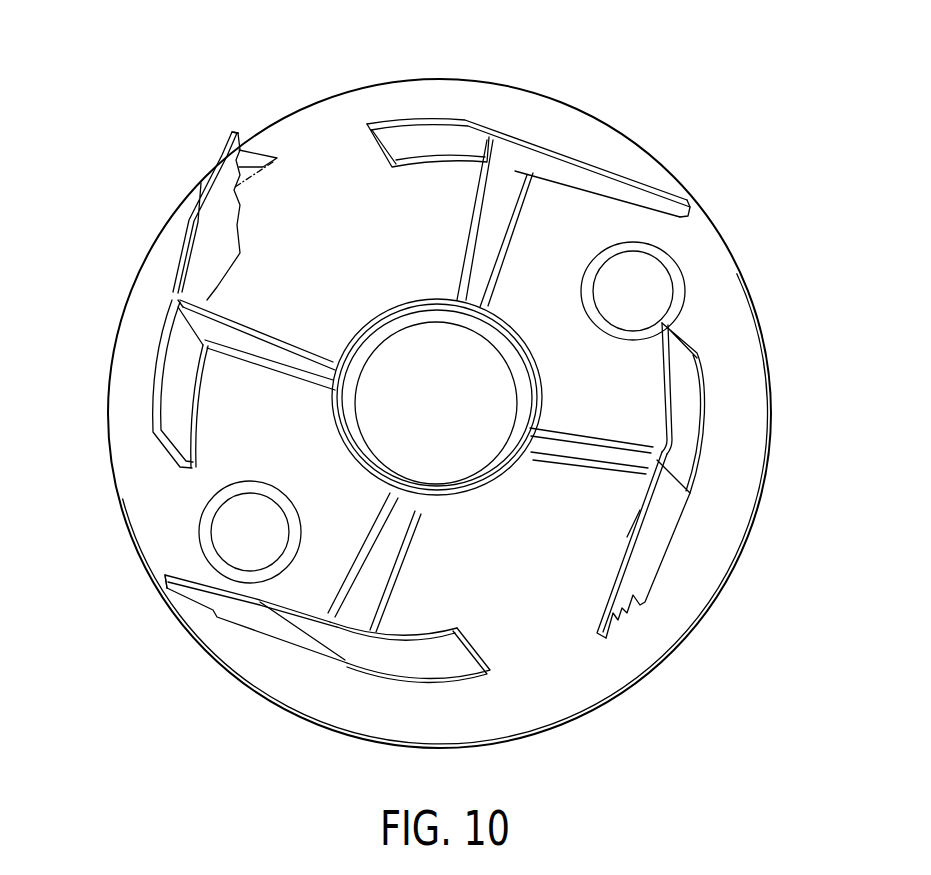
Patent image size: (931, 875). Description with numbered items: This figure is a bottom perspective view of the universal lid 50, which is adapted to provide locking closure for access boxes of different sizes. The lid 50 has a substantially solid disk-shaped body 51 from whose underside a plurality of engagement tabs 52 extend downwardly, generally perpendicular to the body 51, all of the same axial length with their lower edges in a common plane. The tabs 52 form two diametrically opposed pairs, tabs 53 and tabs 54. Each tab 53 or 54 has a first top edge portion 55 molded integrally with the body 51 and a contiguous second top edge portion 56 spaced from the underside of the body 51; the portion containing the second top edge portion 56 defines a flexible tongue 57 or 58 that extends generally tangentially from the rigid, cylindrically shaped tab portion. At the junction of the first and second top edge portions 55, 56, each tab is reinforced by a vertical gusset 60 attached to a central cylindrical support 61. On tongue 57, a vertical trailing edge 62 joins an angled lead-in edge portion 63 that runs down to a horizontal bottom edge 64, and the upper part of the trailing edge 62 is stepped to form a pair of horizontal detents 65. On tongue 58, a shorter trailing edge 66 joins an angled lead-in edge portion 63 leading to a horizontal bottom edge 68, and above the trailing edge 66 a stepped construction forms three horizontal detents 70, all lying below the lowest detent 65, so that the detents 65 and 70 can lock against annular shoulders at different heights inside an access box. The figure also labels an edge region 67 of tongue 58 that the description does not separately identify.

The universal lid 50 is at (744, 257).
The disk-shaped body 51 is at (748, 412).
The engagement tabs 52 is at (612, 325).
The tab 53 is at (227, 238).
The tab 54 is at (417, 634).
The first top edge portion 55 is at (192, 412).
The second top edge portion 56 is at (640, 563).
The flexible tongue 57 is at (590, 160).
The flexible tongue 58 is at (203, 203).
The vertical gusset 60 is at (287, 340).
The central cylindrical support 61 is at (393, 327).
The vertical trailing edge 62 is at (688, 200).
The angled lead-in edge portion 63 is at (618, 175).
The horizontal bottom edge 64 is at (535, 142).
The horizontal detents 65 is at (185, 628).
The trailing edge 66 is at (240, 128).
The serrated edge 67 is at (617, 590).
The horizontal bottom edge 68 is at (185, 252).
The horizontal detents 70 is at (255, 158).